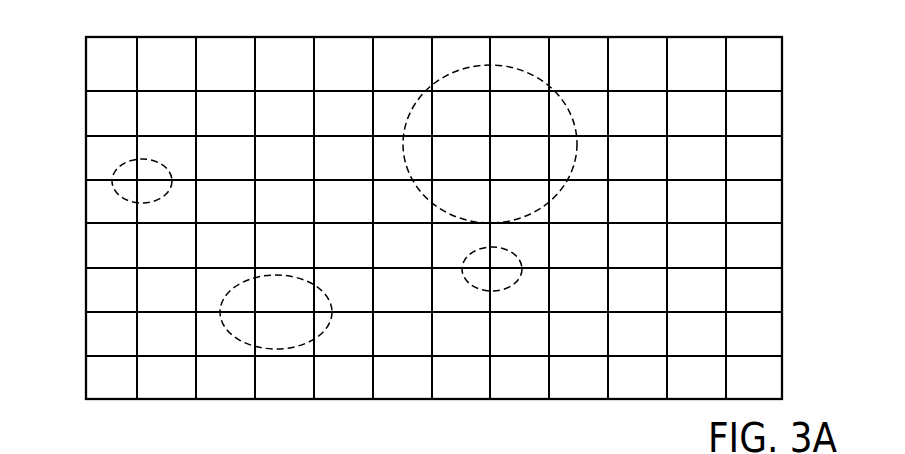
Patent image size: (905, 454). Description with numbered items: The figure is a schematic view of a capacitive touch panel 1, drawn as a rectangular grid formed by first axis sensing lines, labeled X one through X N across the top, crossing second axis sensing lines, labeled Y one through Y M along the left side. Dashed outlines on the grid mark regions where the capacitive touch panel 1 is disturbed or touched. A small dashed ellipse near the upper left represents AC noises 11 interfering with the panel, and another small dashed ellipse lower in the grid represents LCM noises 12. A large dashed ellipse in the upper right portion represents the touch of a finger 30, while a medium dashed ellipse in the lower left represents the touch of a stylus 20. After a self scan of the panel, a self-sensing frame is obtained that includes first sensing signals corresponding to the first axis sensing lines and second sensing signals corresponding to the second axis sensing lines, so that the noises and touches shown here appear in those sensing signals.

The capacitive touch panel 1 is at (785, 66).
The AC noises 11 is at (122, 162).
The LCM noises 12 is at (500, 288).
The stylus 20 is at (278, 350).
The finger 30 is at (578, 128).